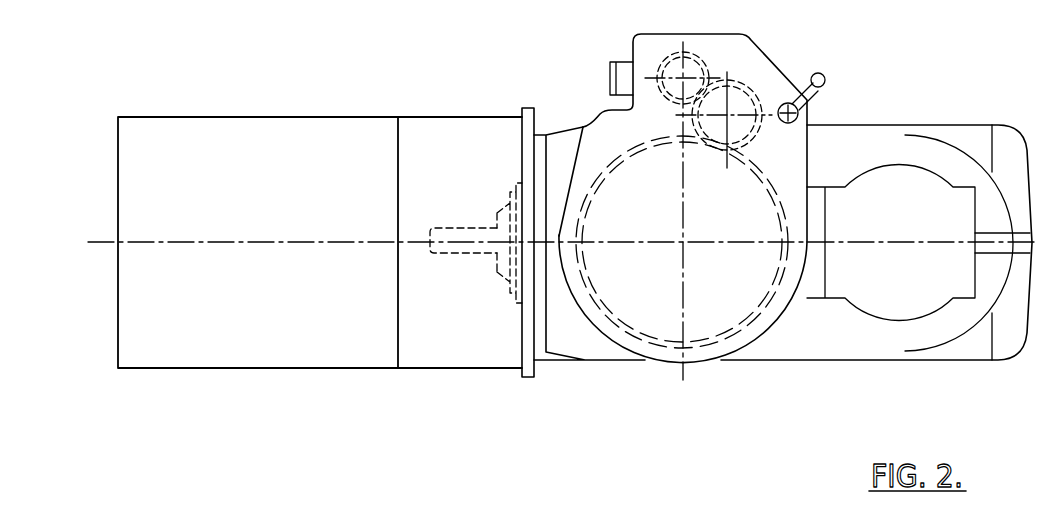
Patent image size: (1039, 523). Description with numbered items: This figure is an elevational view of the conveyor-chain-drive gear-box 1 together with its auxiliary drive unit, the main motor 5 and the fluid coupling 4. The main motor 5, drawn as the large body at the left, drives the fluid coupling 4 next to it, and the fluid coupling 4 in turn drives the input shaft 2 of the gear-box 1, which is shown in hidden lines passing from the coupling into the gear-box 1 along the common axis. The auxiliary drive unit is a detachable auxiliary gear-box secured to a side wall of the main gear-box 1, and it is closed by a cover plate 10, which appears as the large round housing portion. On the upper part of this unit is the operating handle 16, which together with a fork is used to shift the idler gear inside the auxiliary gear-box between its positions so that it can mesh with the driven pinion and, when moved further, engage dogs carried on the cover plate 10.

The conveyor-chain-drive gear-box 1 is at (843, 103).
The input shaft 2 is at (458, 254).
The fluid coupling 4 is at (428, 148).
The main motor 5 is at (232, 148).
The cover plate 10 is at (655, 322).
The operating handle 16 is at (808, 85).